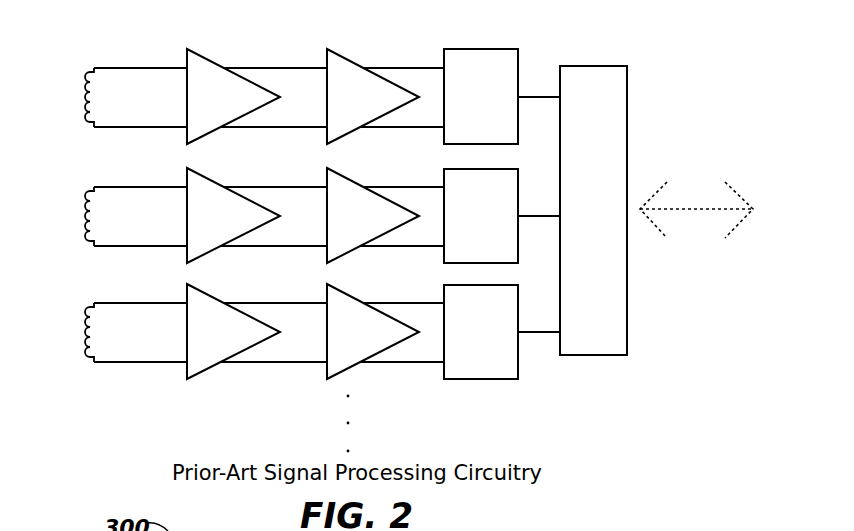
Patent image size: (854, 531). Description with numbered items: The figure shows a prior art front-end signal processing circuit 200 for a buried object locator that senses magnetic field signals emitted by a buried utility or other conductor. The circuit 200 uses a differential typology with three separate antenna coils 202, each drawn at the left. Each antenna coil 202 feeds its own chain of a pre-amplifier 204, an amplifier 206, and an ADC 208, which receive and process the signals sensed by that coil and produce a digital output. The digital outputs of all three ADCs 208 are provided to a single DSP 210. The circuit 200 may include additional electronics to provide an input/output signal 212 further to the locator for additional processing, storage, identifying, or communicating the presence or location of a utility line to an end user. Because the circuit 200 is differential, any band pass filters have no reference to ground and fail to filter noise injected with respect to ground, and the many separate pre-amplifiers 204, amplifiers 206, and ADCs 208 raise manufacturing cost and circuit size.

The front-end signal processing circuit 200 is at (152, 28).
The antenna coil 202 is at (88, 73).
The pre-amplifier 204 is at (201, 111).
The amplifier 206 is at (343, 112).
The ADC 208 is at (463, 140).
The DSP 210 is at (575, 351).
The input/output signal 212 is at (700, 252).